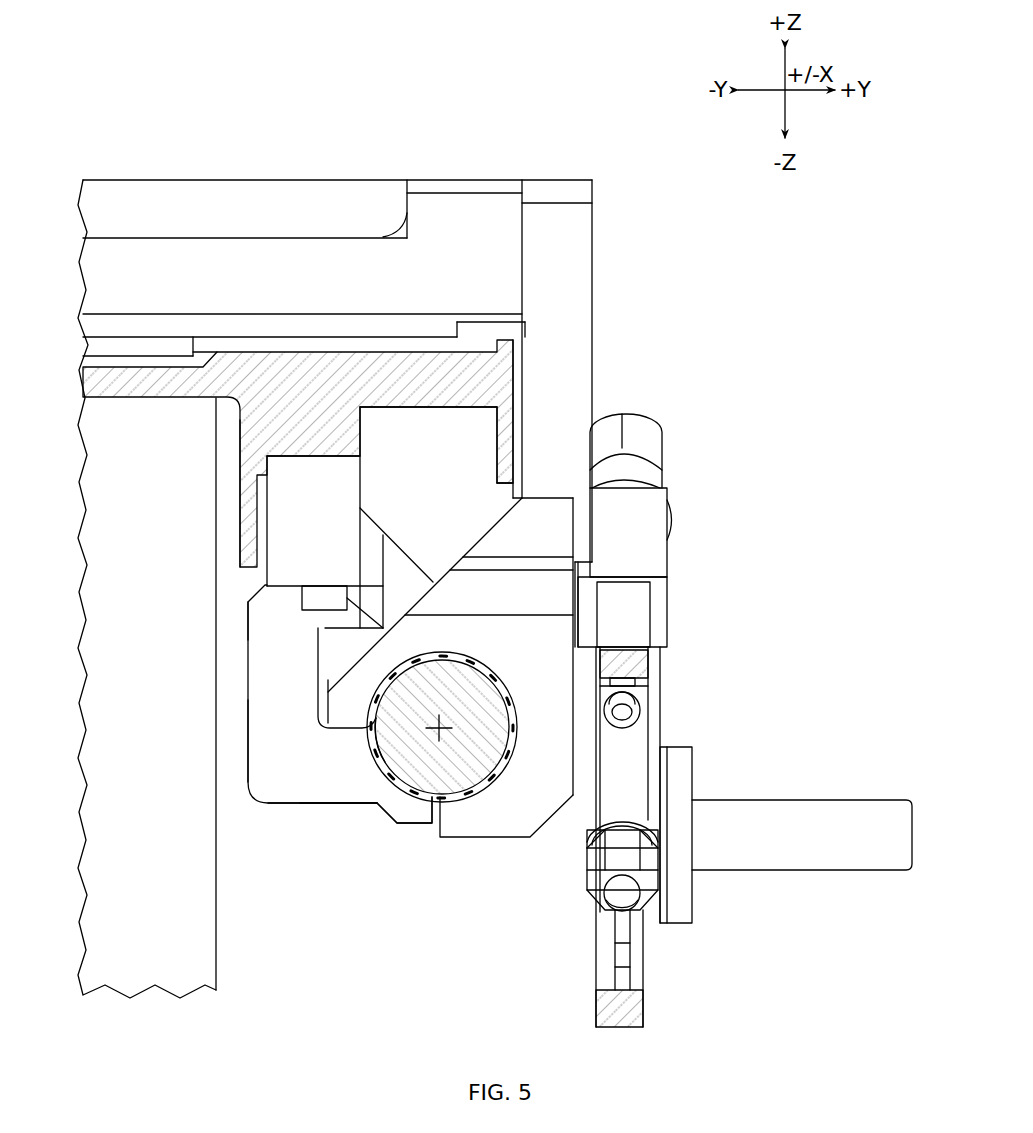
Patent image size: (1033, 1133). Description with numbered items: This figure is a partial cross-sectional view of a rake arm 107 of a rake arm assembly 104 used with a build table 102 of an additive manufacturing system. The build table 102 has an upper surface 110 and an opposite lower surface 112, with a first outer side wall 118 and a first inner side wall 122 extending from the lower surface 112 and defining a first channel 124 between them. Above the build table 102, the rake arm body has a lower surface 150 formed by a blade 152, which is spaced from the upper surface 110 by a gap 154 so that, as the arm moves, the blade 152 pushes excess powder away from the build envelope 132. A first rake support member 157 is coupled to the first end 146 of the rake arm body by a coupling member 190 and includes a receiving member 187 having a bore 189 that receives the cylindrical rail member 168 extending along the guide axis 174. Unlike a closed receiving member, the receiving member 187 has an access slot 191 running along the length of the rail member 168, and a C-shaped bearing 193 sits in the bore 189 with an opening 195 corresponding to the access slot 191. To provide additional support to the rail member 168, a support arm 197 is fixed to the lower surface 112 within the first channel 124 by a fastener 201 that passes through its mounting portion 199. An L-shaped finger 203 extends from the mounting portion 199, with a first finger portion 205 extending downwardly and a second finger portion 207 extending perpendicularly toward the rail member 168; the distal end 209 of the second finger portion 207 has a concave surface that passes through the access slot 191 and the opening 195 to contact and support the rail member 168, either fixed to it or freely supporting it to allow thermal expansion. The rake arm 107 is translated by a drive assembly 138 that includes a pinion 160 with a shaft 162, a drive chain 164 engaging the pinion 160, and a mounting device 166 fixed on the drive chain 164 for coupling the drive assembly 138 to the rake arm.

The build table 102 is at (70, 381).
The rake arm assembly 104 is at (116, 188).
The rake arm 107 is at (589, 49).
The upper surface 110 is at (100, 362).
The lower surface 112 is at (196, 400).
The first outer side wall 118 is at (515, 458).
The first inner side wall 122 is at (240, 520).
The first channel 124 is at (422, 601).
The build envelope 132 is at (218, 960).
The drive assembly 138 is at (688, 837).
The first end 146 is at (520, 214).
The lower surface 150 is at (203, 336).
The blade 152 is at (122, 352).
The gap 154 is at (125, 412).
The first rake support member 157 is at (686, 295).
The pinion 160 is at (694, 774).
The shaft 162 is at (910, 868).
The drive chain 164 is at (647, 1005).
The mounting device 166 is at (664, 554).
The rail member 168 is at (496, 752).
The guide axis 174 is at (436, 726).
The receiving member 187 is at (515, 840).
The bore 189 is at (500, 672).
The coupling member 190 is at (594, 230).
The access slot 191 is at (437, 822).
The bearing 193 is at (436, 651).
The opening 195 is at (372, 738).
The support arm 197 is at (286, 704).
The mounting portion 199 is at (262, 576).
The fastener 201 is at (302, 612).
The finger 203 is at (306, 854).
The first finger portion 205 is at (248, 755).
The second finger portion 207 is at (345, 805).
The distal end 209 is at (384, 758).